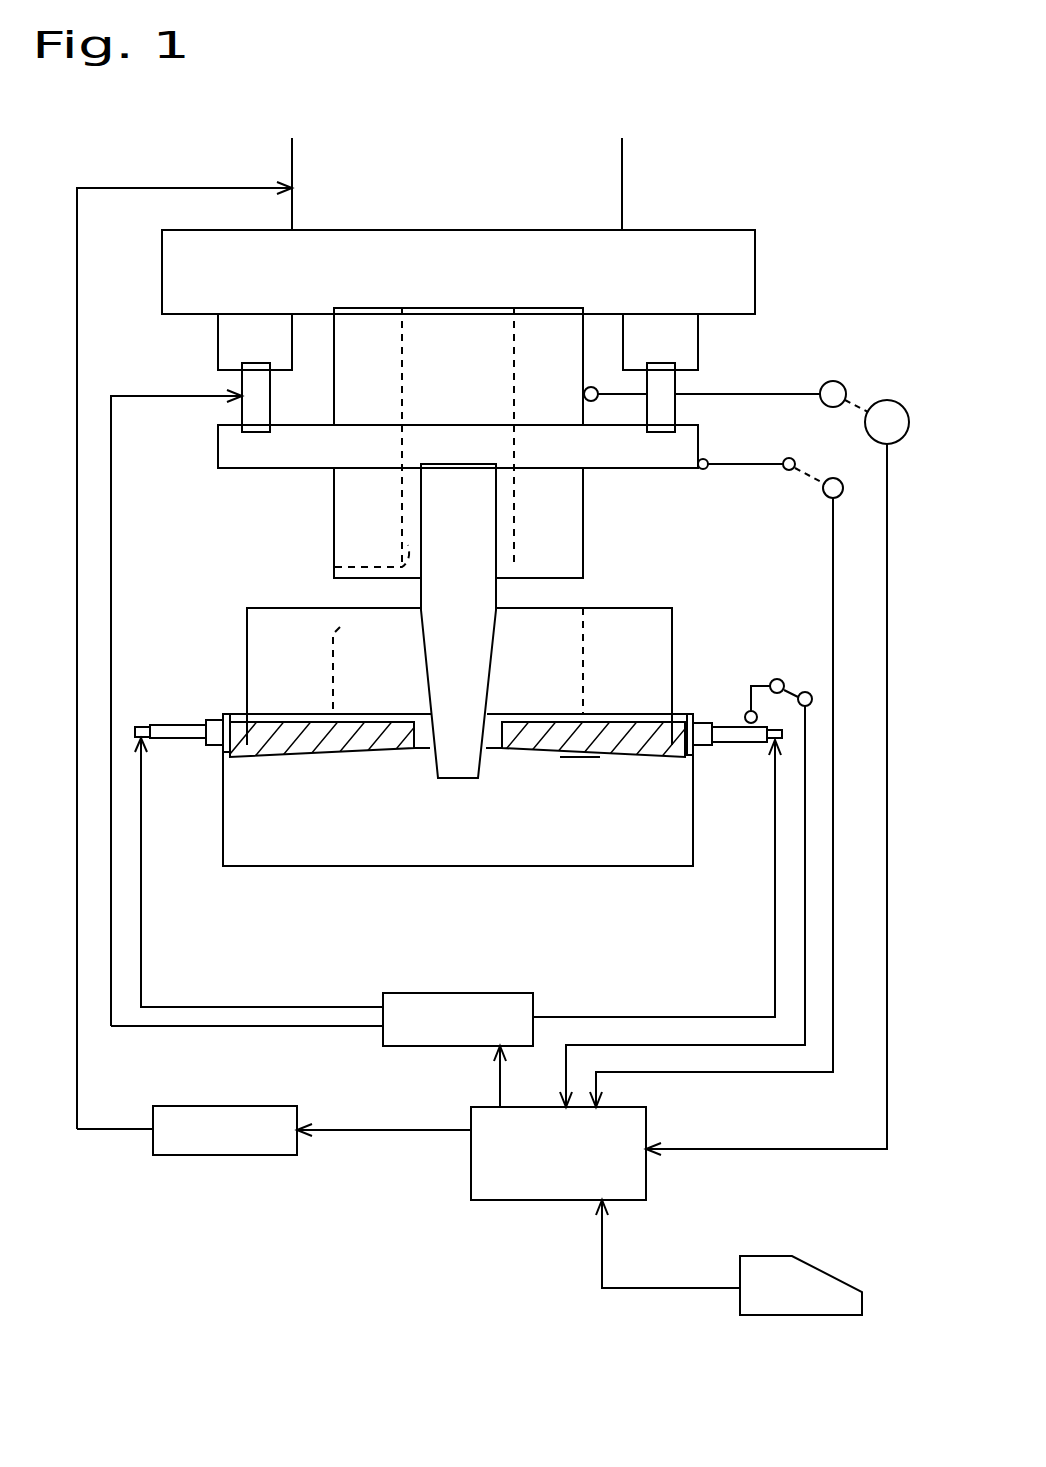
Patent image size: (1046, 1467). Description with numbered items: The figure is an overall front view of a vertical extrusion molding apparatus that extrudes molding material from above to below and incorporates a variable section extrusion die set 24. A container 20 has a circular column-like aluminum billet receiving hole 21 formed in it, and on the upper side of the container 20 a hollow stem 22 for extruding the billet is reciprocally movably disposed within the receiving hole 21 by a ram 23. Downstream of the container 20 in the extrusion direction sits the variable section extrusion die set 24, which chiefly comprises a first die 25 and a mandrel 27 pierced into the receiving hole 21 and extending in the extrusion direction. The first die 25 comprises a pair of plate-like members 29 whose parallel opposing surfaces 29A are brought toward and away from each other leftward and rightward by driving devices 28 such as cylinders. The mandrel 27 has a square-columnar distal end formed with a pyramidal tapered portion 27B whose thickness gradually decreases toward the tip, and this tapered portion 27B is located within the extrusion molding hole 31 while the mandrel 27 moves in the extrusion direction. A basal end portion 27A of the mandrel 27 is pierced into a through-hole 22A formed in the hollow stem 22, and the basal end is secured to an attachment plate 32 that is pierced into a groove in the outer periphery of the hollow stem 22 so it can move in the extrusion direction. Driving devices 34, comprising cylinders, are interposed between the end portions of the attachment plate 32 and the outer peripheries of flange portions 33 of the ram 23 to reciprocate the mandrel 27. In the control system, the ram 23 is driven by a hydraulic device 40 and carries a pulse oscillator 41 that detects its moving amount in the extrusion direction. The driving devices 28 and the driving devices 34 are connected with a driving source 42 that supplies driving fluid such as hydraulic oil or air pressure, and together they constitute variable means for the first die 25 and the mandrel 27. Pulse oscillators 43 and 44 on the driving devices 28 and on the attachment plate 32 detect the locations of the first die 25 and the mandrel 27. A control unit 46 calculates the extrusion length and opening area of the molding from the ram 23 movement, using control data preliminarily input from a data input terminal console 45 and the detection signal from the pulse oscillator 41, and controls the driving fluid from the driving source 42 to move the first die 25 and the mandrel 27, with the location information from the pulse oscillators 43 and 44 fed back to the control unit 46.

The container 20 is at (280, 663).
The receiving hole 21 is at (340, 627).
The hollow stem 22 is at (557, 507).
The through-hole 22A is at (335, 567).
The ram 23 is at (600, 191).
The variable section extrusion die set 24 is at (330, 847).
The first die 25 is at (580, 770).
The mandrel 27 is at (478, 621).
The basal end portion 27A is at (435, 497).
The tapered portion 27B is at (490, 650).
The driving devices 28 is at (175, 732).
The plate-like members 29 is at (320, 758).
The opposing surfaces 29A is at (422, 740).
The extrusion molding hole 31 is at (497, 703).
The attachment plate 32 is at (698, 447).
The flange portions 33 is at (737, 266).
The driving devices 34 is at (252, 387).
The hydraulic device 40 is at (223, 1140).
The pulse oscillator 41 is at (898, 410).
The driving source 42 is at (477, 1005).
The pulse oscillator 43 is at (810, 693).
The pulse oscillator 44 is at (826, 500).
The data input terminal console 45 is at (808, 1287).
The control unit 46 is at (513, 1185).